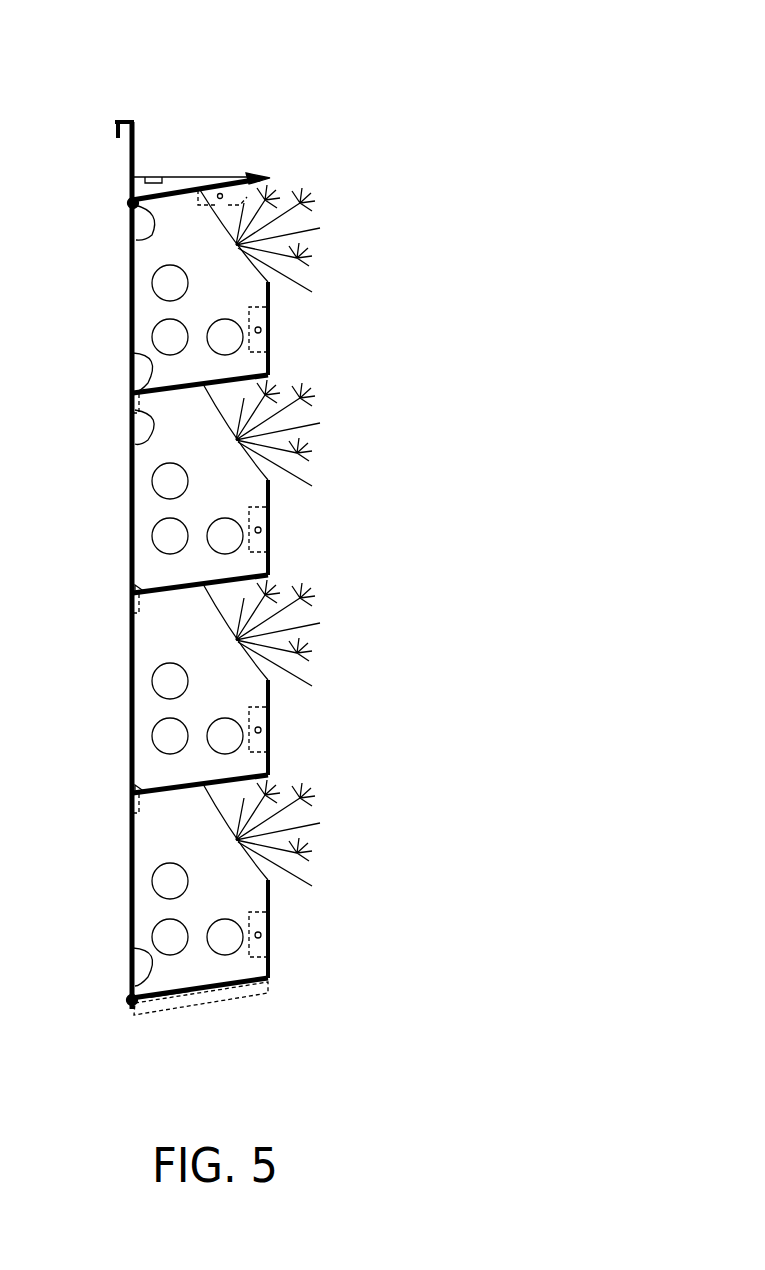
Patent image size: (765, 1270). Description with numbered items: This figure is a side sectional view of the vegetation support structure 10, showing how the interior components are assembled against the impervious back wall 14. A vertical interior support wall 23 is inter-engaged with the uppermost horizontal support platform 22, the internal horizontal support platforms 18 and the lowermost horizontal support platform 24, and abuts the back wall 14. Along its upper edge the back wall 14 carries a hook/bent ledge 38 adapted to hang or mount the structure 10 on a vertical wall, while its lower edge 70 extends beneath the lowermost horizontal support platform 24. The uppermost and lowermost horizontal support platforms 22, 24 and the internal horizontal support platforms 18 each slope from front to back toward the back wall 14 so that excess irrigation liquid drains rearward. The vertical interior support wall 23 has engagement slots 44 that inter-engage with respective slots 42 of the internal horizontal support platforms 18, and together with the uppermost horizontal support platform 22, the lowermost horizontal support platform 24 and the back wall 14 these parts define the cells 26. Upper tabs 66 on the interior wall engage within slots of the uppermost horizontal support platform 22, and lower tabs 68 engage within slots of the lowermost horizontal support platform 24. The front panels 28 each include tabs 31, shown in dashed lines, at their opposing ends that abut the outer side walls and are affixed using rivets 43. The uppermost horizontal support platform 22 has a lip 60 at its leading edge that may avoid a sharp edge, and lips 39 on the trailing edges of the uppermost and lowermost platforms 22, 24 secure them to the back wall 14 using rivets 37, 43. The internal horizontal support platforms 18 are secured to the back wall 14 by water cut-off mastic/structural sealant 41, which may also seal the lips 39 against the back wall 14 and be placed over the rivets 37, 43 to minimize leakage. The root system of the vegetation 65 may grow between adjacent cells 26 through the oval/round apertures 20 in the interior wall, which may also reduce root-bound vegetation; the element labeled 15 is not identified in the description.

The vegetation support structure 10 is at (272, 97).
The impervious back wall 14 is at (133, 202).
The hook/bent ledge 38 is at (125, 108).
The rivet 37 is at (131, 206).
The rivet 43 is at (127, 1000).
The lower edge of back wall 70 is at (132, 1010).
The lip 60 is at (254, 176).
The upper tabs 66 is at (173, 178).
The engagement slots 44 is at (270, 382).
The lowermost horizontal support platform 24 is at (250, 980).
The lower tabs 68 is at (182, 1002).
The internal horizontal support platform 18 is at (160, 590).
The water cut-off mastic/structural sealant 41 is at (133, 353).
The lip 39 is at (133, 445).
The uppermost horizontal support platform 22 is at (166, 213).
The vertical interior support wall 23 is at (228, 452).
The cells 26 is at (163, 638).
The front panels 28 is at (275, 345).
The oval/round apertures 20 is at (167, 683).
The tabs 31 is at (272, 330).
The slots 42 is at (252, 572).
The connector pin hole 15 is at (262, 335).
The vegetation 65 is at (308, 207).